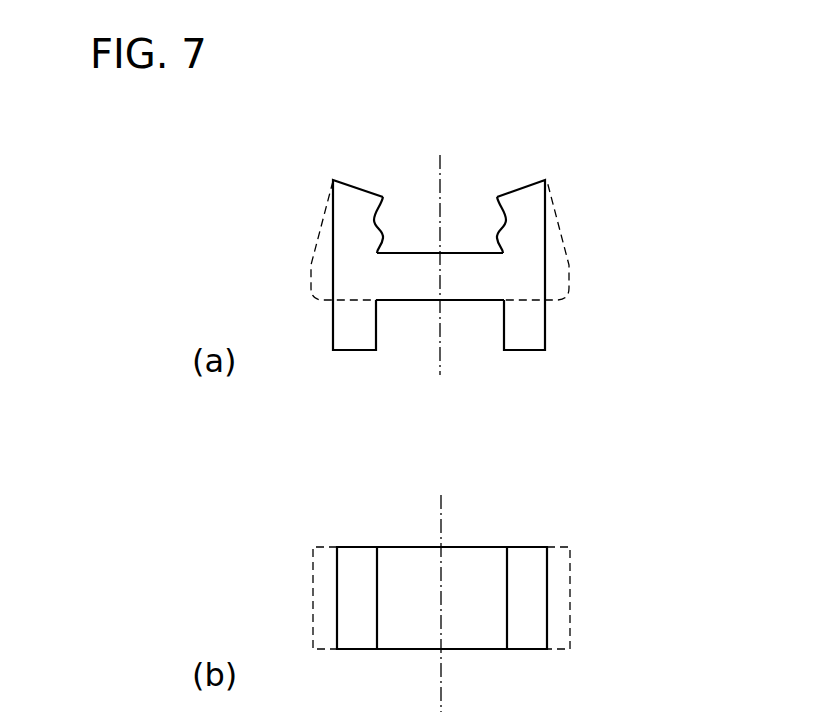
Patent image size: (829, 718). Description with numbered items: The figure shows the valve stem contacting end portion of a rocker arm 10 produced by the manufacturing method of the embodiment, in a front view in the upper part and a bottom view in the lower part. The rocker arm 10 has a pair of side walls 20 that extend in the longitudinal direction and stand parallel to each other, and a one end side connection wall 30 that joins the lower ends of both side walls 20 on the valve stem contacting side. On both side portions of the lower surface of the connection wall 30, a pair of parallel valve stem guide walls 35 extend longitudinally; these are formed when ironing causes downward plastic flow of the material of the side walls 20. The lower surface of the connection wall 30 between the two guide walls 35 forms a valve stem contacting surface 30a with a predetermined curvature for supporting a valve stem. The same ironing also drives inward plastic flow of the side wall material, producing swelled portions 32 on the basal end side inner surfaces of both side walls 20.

The rocker arm 10 is at (607, 154).
The side wall 20 is at (342, 233).
The one end side connection wall 30 is at (460, 267).
The valve stem contacting surface 30a is at (460, 302).
The swelled portion 32 is at (375, 241).
The valve stem guide wall 35 is at (357, 337).